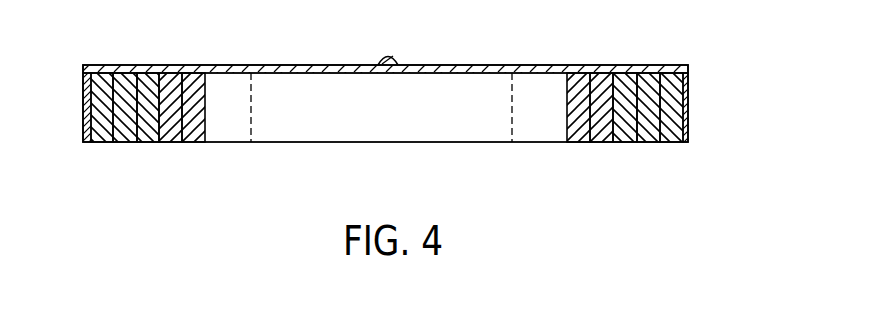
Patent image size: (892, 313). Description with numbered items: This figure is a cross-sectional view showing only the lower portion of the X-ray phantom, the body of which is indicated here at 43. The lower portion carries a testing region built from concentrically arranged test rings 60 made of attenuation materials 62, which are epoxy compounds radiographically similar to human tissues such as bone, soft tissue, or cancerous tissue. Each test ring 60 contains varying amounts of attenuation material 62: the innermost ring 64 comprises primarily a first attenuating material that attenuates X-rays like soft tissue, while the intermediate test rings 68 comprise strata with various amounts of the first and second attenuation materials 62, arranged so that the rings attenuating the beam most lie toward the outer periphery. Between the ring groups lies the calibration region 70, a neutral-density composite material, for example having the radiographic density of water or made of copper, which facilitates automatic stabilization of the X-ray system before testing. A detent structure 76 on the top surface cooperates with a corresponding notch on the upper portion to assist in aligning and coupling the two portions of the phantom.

The filter assembly 43 is at (666, 52).
The test rings 60 is at (154, 83).
The attenuation materials 62 is at (97, 102).
The innermost ring 64 is at (199, 76).
The intermediate test rings 68 is at (588, 150).
The calibration region 70 is at (467, 130).
The detent structures 76 is at (395, 57).